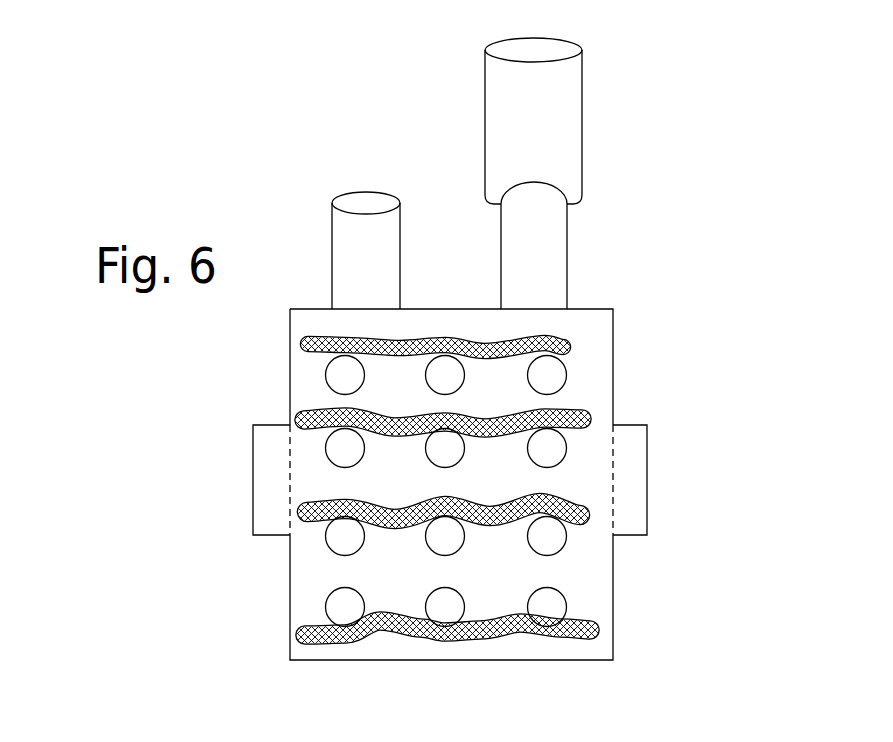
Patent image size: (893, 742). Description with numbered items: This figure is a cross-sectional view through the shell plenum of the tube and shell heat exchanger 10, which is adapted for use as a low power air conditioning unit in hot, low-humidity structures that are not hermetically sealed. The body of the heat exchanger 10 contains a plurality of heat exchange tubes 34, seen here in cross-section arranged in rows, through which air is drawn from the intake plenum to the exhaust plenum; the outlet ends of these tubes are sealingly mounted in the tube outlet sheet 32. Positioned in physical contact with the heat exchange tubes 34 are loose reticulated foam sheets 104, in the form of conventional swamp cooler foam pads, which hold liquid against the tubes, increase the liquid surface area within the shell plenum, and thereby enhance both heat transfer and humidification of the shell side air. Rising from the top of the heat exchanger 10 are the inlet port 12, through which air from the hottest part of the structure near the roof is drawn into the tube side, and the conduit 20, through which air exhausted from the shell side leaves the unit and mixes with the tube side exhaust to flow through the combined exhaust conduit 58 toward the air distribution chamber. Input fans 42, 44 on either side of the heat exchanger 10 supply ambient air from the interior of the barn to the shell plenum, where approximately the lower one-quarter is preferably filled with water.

The tube and shell heat exchanger 10 is at (391, 130).
The inlet port 12 is at (381, 263).
The conduit 20 is at (546, 256).
The combined exhaust conduit 58 is at (546, 150).
The tube outlet sheet 32 is at (607, 347).
The heat exchange tubes 34 is at (460, 548).
The input fan 42 is at (252, 517).
The input fan 44 is at (647, 493).
The loose reticulated foam sheets 104 is at (317, 507).